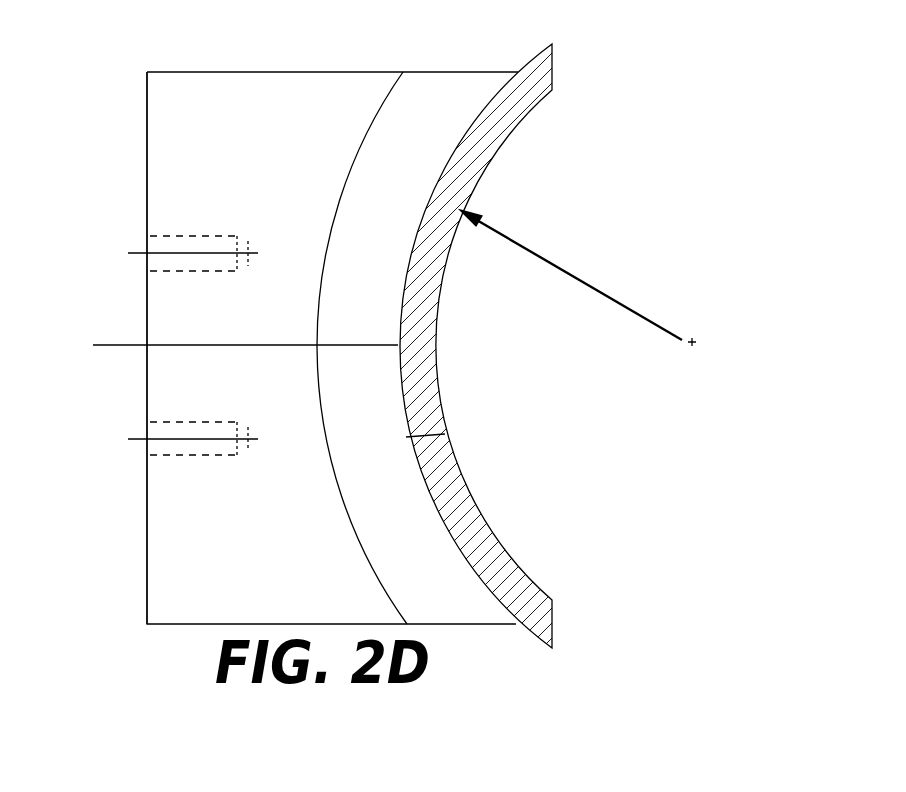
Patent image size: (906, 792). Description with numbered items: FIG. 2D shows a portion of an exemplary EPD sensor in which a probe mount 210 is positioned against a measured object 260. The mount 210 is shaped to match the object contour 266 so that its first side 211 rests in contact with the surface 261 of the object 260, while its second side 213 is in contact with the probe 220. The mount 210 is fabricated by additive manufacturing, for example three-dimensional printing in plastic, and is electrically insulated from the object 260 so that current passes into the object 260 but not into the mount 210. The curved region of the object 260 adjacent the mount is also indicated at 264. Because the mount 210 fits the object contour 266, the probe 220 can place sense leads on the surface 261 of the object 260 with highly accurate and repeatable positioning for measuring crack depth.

The probe mount 210 is at (163, 537).
The second side 213 is at (147, 154).
The first side 211 is at (417, 226).
The probe 220 is at (108, 346).
The object 260 is at (552, 54).
The surface 261 is at (445, 434).
The lens body 264 is at (487, 553).
The object contour 266 is at (626, 306).